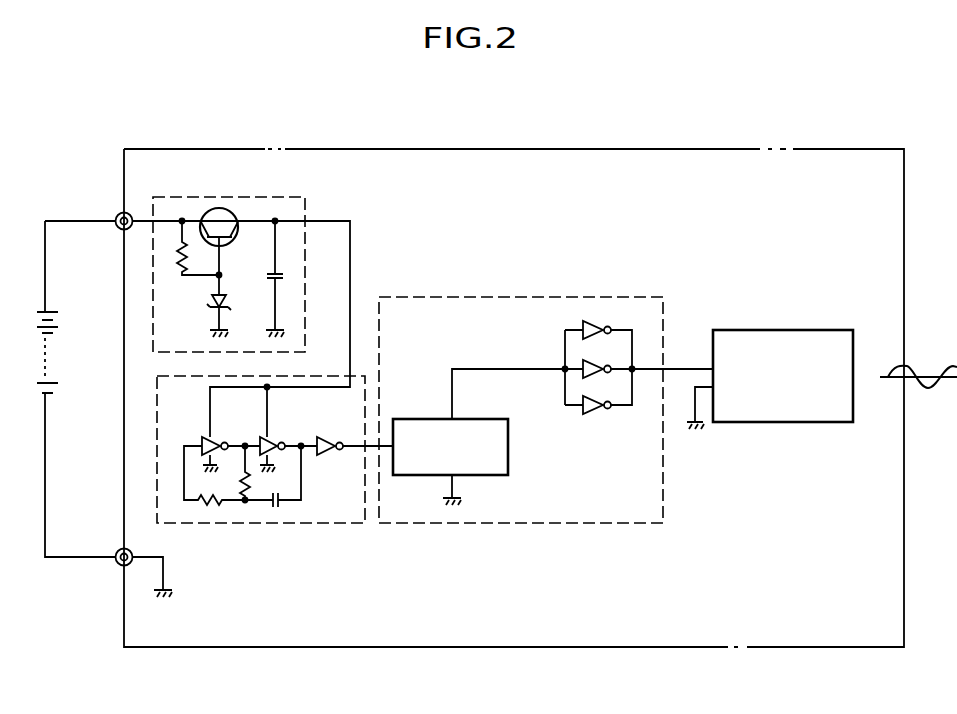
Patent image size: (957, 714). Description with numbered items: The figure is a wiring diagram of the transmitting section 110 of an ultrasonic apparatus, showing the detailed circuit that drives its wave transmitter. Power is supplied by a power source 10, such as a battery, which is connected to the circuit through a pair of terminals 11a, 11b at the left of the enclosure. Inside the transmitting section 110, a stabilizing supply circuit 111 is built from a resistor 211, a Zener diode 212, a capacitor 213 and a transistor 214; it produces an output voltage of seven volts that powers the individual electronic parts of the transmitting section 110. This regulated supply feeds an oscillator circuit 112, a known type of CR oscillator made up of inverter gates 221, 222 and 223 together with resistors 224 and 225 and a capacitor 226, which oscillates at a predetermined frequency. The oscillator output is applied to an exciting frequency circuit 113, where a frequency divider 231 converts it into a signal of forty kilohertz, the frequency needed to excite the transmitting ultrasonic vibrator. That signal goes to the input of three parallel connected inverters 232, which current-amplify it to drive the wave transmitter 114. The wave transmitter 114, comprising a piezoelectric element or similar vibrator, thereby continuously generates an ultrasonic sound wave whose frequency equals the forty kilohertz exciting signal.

The power source 10 is at (48, 356).
The terminal 11a is at (118, 565).
The terminal 11b is at (120, 216).
The transmitting section 110 is at (708, 146).
The stabilizing supply circuit 111 is at (268, 197).
The oscillator circuit 112 is at (318, 524).
The exciting frequency circuit 113 is at (586, 524).
The wave transmitter 114 is at (798, 423).
The resistor 211 is at (179, 259).
The Zener diode 212 is at (217, 300).
The capacitor 213 is at (268, 276).
The transistor 214 is at (215, 208).
The inverter gate 221 is at (205, 437).
The inverter gate 222 is at (263, 440).
The inverter gate 223 is at (330, 438).
The resistor 224 is at (212, 503).
The resistor 225 is at (240, 483).
The capacitor 226 is at (282, 495).
The frequency divider 231 is at (508, 446).
The parallel connected inverters 232 is at (596, 408).